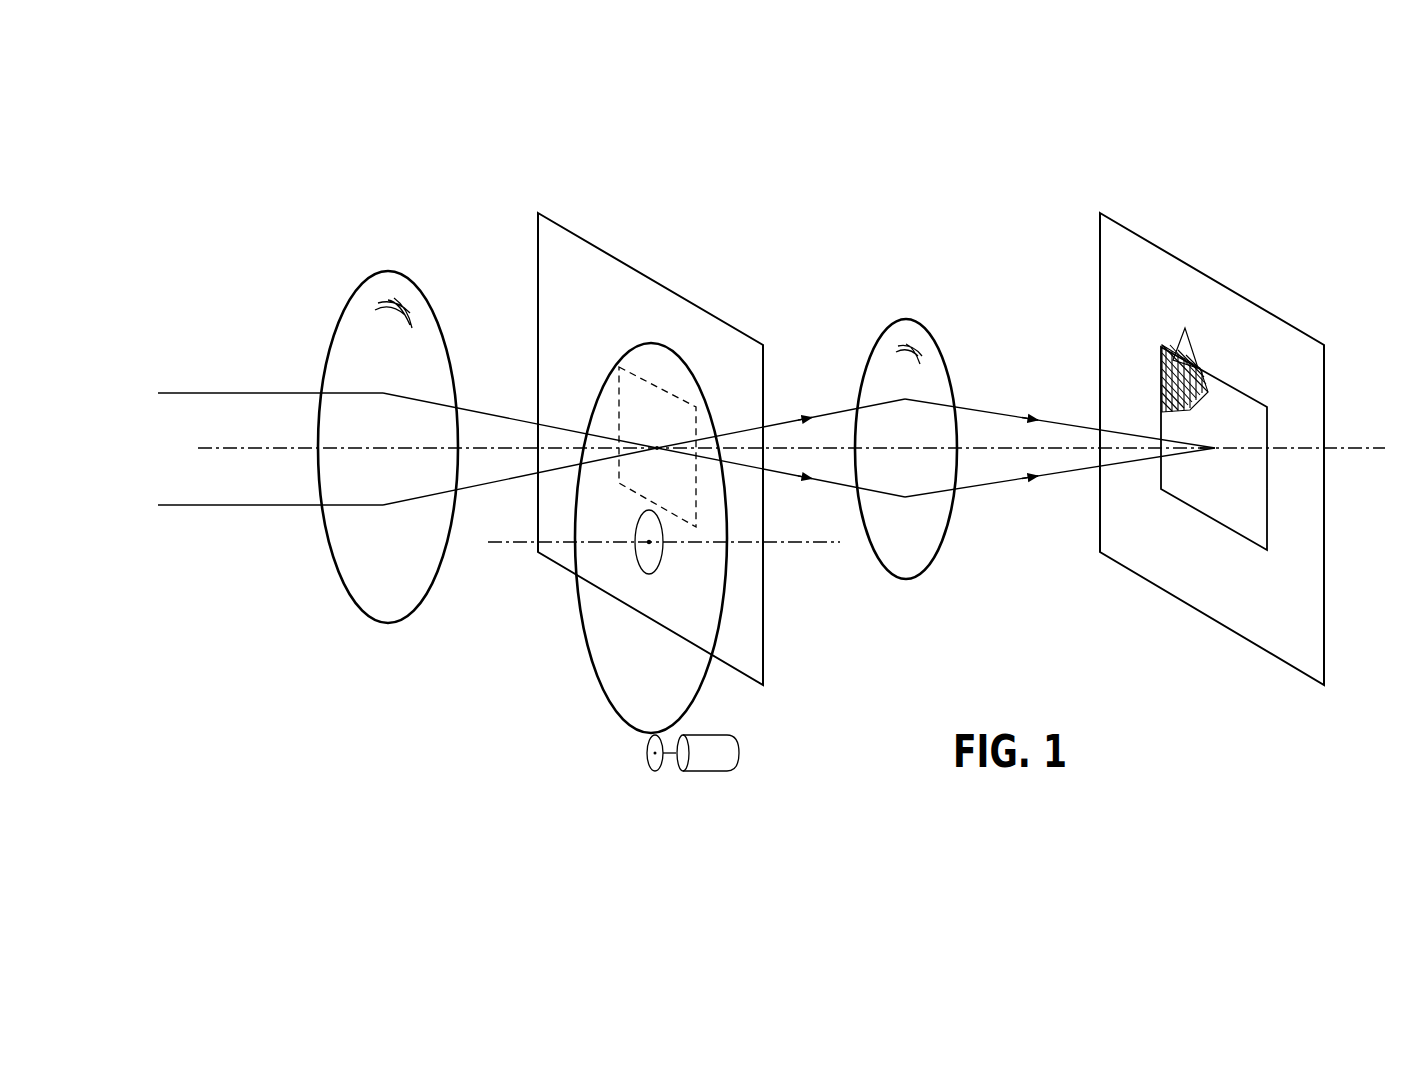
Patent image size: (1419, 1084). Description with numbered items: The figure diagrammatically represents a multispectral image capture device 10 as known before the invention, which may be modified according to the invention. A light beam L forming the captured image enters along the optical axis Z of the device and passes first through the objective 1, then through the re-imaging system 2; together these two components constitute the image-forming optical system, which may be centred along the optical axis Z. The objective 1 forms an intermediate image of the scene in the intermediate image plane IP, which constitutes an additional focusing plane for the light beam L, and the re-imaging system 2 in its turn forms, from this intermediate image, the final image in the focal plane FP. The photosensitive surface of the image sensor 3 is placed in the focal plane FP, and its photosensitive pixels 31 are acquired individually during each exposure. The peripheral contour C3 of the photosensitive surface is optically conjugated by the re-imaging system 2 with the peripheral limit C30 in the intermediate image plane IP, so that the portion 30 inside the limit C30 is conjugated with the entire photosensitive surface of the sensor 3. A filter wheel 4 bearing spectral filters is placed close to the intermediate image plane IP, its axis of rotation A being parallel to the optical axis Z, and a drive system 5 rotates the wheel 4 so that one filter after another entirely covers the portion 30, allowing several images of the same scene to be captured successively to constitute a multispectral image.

The objective 1 is at (417, 612).
The re-imaging system 2 is at (930, 558).
The image sensor 3 is at (1230, 507).
The filter wheel 4 is at (605, 700).
The system for driving the wheel in rotation 5 is at (710, 773).
The multispectral image capture device 10 is at (358, 749).
The portion of the intermediate image plane 30 is at (670, 432).
The photosensitive pixels of the image sensor 31 is at (1185, 356).
The peripheral limit of the portion of the intermediate image plane C30 is at (653, 387).
The peripheral contour of the photosensitive surface of the image sensor C3 is at (1240, 393).
The intermediate image plane IP is at (587, 238).
The focal plane FP is at (1145, 238).
The light beam L is at (160, 393).
The optical axis Z is at (233, 445).
The axis of rotation of the filter wheel A is at (515, 542).